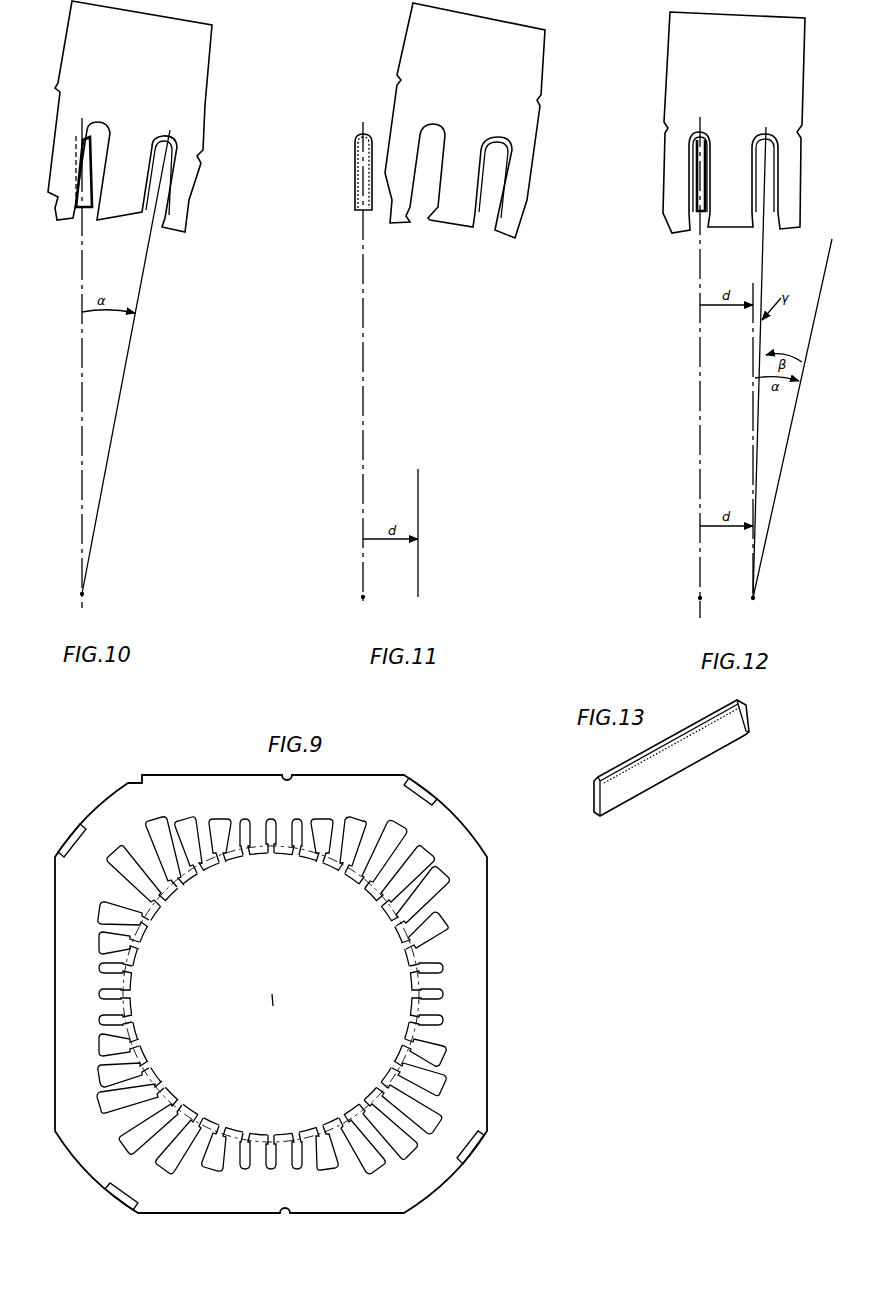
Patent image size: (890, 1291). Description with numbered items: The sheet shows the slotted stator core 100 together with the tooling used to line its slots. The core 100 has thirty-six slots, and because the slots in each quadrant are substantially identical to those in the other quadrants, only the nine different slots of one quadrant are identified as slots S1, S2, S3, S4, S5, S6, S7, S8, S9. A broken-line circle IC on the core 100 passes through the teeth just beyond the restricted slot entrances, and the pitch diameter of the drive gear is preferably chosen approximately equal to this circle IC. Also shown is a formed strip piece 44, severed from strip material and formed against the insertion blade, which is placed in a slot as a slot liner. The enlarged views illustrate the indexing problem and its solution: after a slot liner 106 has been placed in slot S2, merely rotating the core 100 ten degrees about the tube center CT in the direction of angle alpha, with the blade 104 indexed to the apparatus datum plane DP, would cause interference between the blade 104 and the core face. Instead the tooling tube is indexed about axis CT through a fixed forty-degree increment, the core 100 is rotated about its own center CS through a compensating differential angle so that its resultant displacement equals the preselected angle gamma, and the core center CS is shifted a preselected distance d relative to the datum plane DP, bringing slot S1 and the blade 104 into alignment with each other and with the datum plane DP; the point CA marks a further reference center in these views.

In FIG. 10, the stator core 100 is at (200, 53).
In FIG. 11, the stator core 100 is at (533, 44).
In FIG. 12, the stator core 100 is at (675, 80).
In FIG. 9, the stator core 100 is at (161, 774).
In FIG. 10, the blade 104 is at (97, 134).
In FIG. 11, the blade 104 is at (357, 138).
In FIG. 12, the blade 104 is at (705, 135).
In FIG. 10, the slot liner 106 is at (168, 138).
In FIG. 11, the slot liner 106 is at (498, 139).
In FIG. 12, the slot liner 106 is at (760, 132).
In FIG. 13, the piece 44 is at (680, 760).
In FIG. 10, the slot S1 is at (105, 125).
In FIG. 11, the slot S1 is at (433, 124).
In FIG. 12, the slot S1 is at (686, 148).
In FIG. 9, the slot S1 is at (246, 817).
In FIG. 10, the slot S2 is at (173, 185).
In FIG. 11, the slot S2 is at (513, 145).
In FIG. 12, the slot S2 is at (782, 142).
In FIG. 9, the slot S2 is at (272, 818).
In FIG. 9, the slot S3 is at (298, 818).
In FIG. 9, the slot S4 is at (326, 819).
In FIG. 9, the slot S5 is at (364, 818).
In FIG. 9, the slot S6 is at (402, 830).
In FIG. 9, the slot S7 is at (433, 858).
In FIG. 9, the slot S8 is at (446, 884).
In FIG. 9, the slot S9 is at (447, 930).
In FIG. 9, the circle IC is at (443, 1006).
In FIG. 10, the datum plane DP is at (82, 353).
In FIG. 11, the datum plane DP is at (363, 458).
In FIG. 12, the datum plane DP is at (700, 355).
In FIG. 10, the center of slot liner arc CA is at (82, 594).
In FIG. 11, the center of slot liner arc CA is at (418, 597).
In FIG. 12, the center of slot liner arc CA is at (753, 598).
In FIG. 10, the center of the tube CT is at (82, 594).
In FIG. 11, the center of the tube CT is at (366, 597).
In FIG. 12, the center of the tube CT is at (704, 597).
In FIG. 10, the center of the core CS is at (82, 594).
In FIG. 11, the center of the core CS is at (418, 597).
In FIG. 12, the center of the core CS is at (753, 598).
In FIG. 9, the center of the core CS is at (277, 1012).